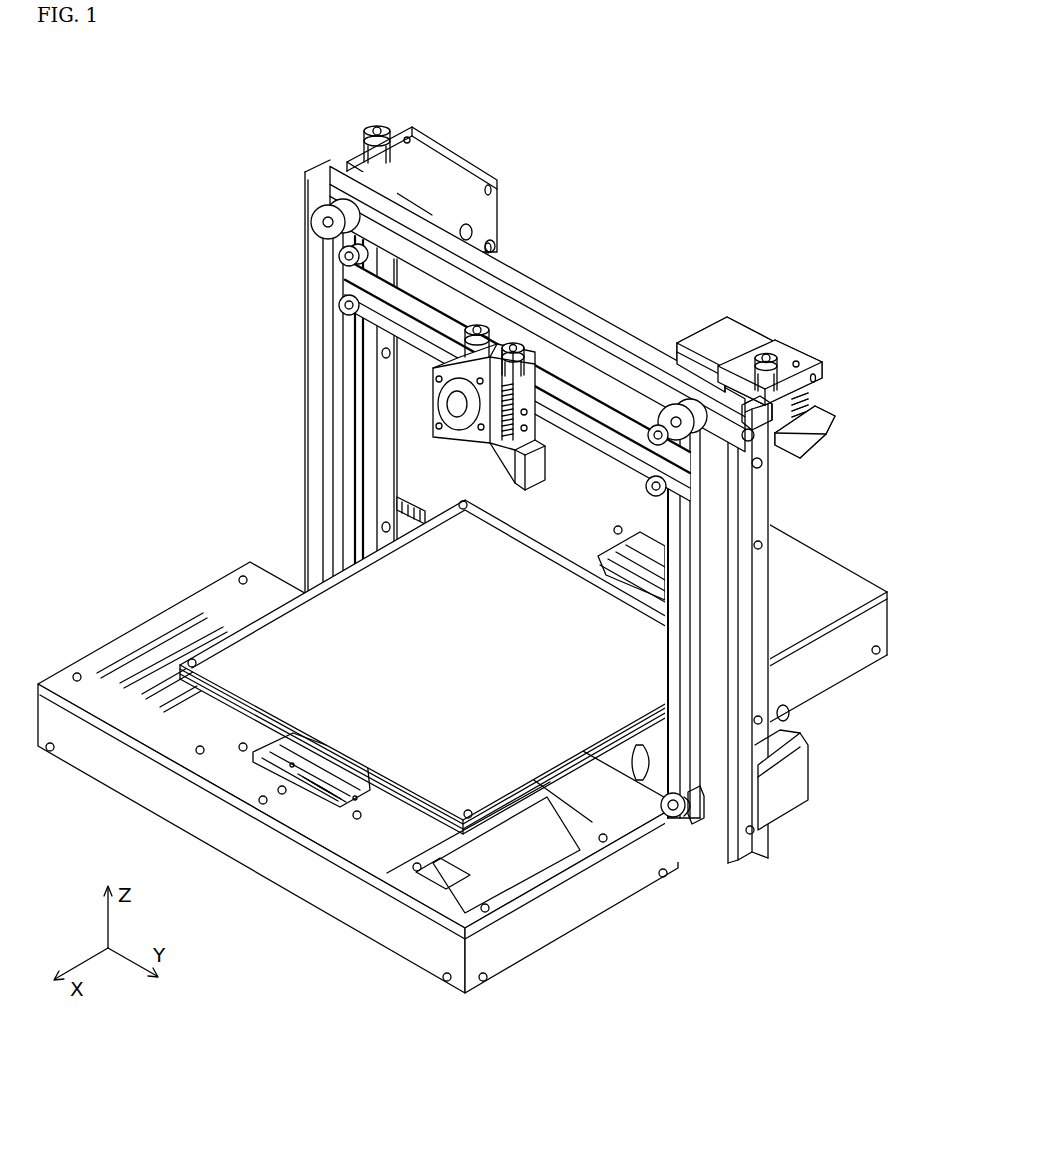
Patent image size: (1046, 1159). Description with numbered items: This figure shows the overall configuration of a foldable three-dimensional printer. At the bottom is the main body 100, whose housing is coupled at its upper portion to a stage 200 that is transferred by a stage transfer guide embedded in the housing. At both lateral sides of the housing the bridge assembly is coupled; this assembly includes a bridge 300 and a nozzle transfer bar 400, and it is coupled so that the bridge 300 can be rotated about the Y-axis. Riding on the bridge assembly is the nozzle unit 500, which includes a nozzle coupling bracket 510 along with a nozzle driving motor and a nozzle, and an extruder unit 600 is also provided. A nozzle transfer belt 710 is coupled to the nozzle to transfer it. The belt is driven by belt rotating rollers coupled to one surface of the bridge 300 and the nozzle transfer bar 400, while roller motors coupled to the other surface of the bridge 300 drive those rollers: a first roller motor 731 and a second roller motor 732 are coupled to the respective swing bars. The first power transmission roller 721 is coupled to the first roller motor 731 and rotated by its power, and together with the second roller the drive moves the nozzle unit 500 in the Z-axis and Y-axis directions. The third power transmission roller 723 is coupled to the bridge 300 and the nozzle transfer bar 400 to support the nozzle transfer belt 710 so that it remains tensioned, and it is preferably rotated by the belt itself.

The main body 100 is at (598, 903).
The stage 200 is at (270, 655).
The bridge 300 is at (590, 322).
The nozzle transfer bar 400 is at (607, 385).
The nozzle unit 500 is at (440, 397).
The nozzle coupling bracket 510 is at (513, 343).
The extruder unit 600 is at (443, 182).
The nozzle transfer belt 710 is at (698, 673).
The first power transmission roller 721 is at (680, 832).
The third power transmission roller 723 is at (347, 295).
The first roller motor 731 is at (777, 793).
The second roller motor 732 is at (403, 510).